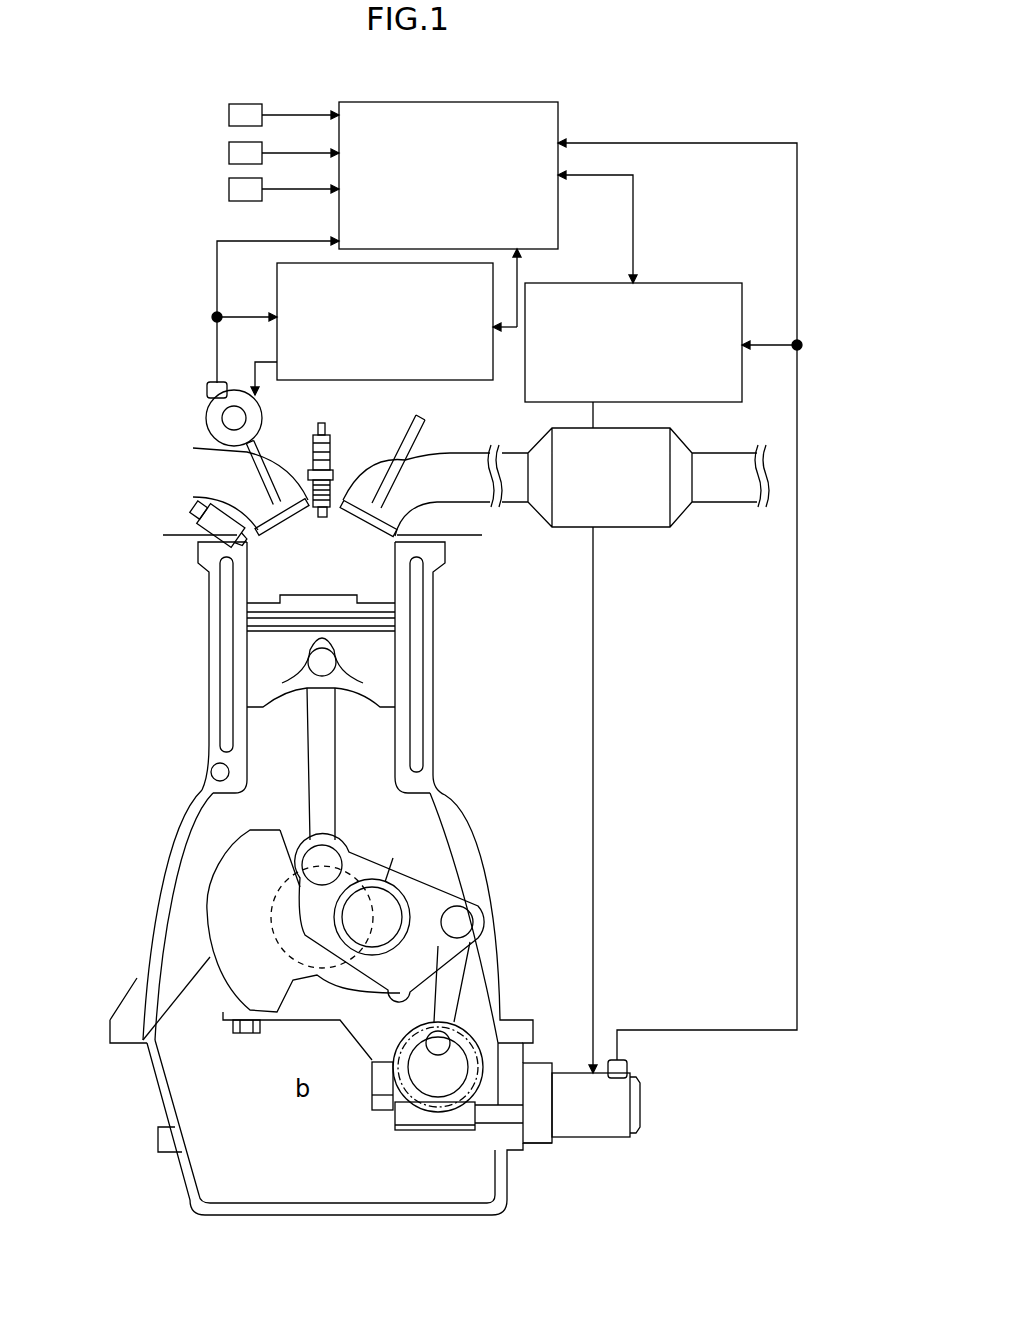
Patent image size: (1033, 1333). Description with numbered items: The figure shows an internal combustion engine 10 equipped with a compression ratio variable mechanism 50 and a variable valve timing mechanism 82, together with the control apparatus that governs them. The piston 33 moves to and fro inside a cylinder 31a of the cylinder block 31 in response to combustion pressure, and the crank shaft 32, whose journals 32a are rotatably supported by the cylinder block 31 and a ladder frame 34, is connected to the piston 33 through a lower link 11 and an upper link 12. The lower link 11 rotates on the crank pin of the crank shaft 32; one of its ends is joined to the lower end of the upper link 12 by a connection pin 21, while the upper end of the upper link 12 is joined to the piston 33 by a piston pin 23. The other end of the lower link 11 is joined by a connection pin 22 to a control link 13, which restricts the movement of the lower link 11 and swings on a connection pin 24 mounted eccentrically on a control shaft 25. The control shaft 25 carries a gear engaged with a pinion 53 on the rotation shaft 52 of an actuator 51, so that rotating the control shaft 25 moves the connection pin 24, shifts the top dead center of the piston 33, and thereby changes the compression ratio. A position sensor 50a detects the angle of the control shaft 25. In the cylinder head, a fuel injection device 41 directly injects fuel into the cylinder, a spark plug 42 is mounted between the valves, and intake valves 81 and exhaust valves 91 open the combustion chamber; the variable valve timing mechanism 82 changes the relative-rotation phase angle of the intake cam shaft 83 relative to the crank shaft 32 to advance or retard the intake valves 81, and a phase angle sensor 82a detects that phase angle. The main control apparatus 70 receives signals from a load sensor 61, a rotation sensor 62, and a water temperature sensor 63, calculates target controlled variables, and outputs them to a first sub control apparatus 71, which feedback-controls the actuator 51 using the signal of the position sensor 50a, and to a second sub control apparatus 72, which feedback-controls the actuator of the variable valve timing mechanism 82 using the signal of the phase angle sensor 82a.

The internal combustion engine 10 is at (91, 552).
The lower link 11 is at (413, 878).
The upper link 12 is at (336, 802).
The control link 13 is at (458, 968).
The connection pin 21 is at (315, 862).
The connection pin 22 is at (462, 918).
The piston pin 23 is at (315, 660).
The connection pin 24 is at (428, 1050).
The control shaft 25 is at (433, 1090).
The cylinder block 31 is at (436, 748).
The cylinder 31a is at (258, 582).
The crank shaft 32 is at (228, 970).
The journal 32a is at (270, 912).
The piston 33 is at (388, 688).
The ladder frame 34 is at (290, 1017).
The fuel injection device 41 is at (197, 508).
The spark plug 42 is at (333, 455).
The compression ratio variable mechanism 50 is at (622, 1007).
The position sensor 50a is at (627, 1066).
The actuator 51 is at (597, 1128).
The rotation shaft 52 is at (487, 1117).
The pinion 53 is at (460, 1117).
The load sensor 61 is at (227, 117).
The rotation sensor 62 is at (229, 157).
The water temperature sensor 63 is at (229, 195).
The main control apparatus 70 is at (558, 227).
The first sub control apparatus 71 is at (467, 381).
The second sub control apparatus 72 is at (693, 283).
The intake valve 81 is at (298, 517).
The variable valve timing mechanism 82 is at (205, 412).
The phase angle sensor 82a is at (208, 383).
The intake cam shaft 83 is at (222, 420).
The exhaust valve 91 is at (357, 528).